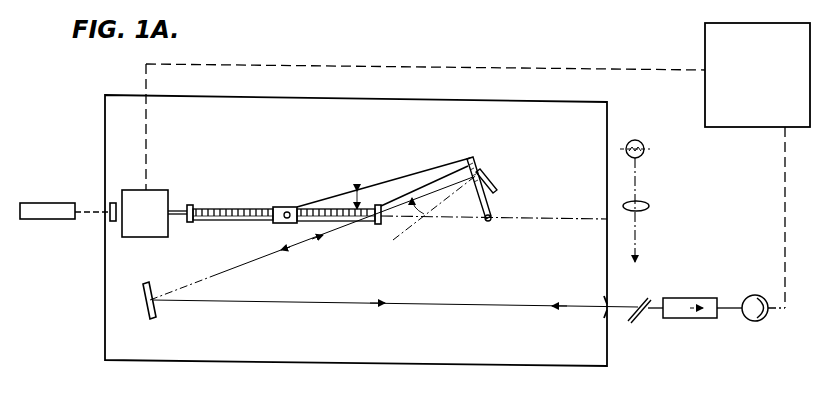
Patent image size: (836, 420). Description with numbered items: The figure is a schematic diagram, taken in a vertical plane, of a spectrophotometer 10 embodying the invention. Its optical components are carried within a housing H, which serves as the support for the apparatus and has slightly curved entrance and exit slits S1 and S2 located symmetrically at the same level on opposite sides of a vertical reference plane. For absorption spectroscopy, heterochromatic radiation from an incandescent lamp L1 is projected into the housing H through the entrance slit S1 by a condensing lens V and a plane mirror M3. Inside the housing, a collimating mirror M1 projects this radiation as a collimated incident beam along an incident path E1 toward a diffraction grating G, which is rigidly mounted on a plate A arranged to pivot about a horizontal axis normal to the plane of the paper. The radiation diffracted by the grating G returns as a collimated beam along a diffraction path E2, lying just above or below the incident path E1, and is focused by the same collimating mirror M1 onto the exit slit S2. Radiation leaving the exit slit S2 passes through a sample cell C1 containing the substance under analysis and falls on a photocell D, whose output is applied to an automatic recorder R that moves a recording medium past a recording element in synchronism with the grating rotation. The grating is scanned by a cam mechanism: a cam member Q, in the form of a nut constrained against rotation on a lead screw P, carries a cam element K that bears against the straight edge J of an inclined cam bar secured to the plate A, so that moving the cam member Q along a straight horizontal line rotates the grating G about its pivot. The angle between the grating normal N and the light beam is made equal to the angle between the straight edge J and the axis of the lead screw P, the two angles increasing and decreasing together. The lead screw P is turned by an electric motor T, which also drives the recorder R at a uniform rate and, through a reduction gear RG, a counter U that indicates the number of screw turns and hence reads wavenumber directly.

The spectrophotometer system 10 is at (722, 181).
The housing H is at (411, 368).
The automatic recorder R is at (705, 41).
The counter U is at (63, 203).
The reduction gear RG is at (113, 203).
The electric motor T is at (160, 190).
The lead screw P is at (235, 208).
The cam member Q is at (281, 207).
The cam element K is at (297, 207).
The straight edge J is at (381, 184).
The plate A is at (473, 160).
The diffraction grating G is at (492, 178).
The grating normal N is at (486, 221).
The collimating mirror M1 is at (146, 285).
The incident path E1 is at (302, 243).
The diffraction path E2 is at (395, 303).
The entrance slit S1 is at (607, 304).
The exit slit S2 is at (607, 310).
The plane mirror M3 is at (648, 300).
The sample cell C1 is at (690, 318).
The photocell D is at (760, 321).
The incandescent lamp L1 is at (641, 140).
The condensing lens V is at (650, 206).